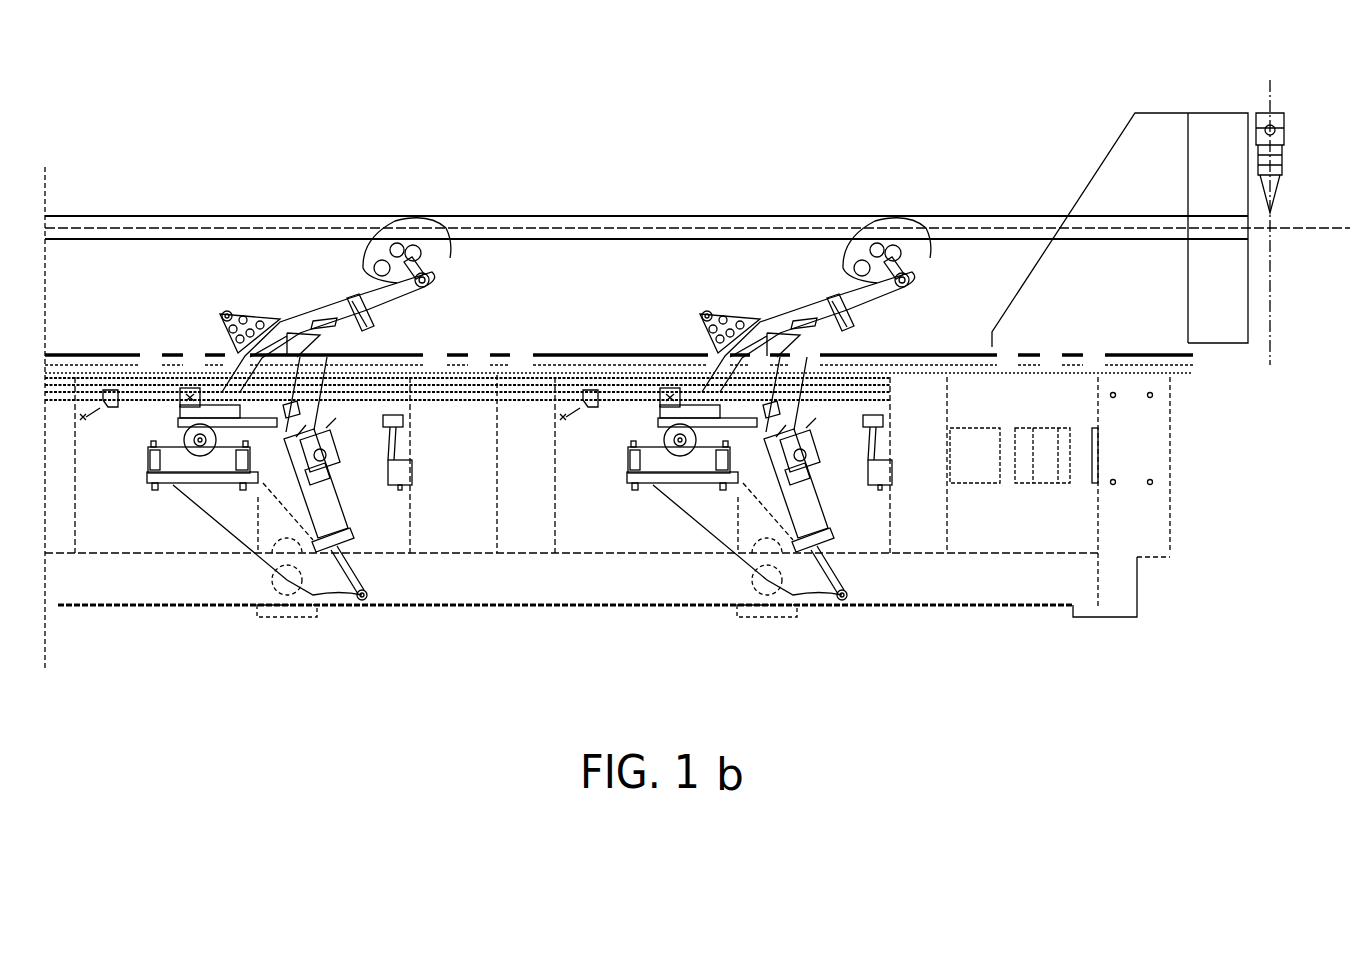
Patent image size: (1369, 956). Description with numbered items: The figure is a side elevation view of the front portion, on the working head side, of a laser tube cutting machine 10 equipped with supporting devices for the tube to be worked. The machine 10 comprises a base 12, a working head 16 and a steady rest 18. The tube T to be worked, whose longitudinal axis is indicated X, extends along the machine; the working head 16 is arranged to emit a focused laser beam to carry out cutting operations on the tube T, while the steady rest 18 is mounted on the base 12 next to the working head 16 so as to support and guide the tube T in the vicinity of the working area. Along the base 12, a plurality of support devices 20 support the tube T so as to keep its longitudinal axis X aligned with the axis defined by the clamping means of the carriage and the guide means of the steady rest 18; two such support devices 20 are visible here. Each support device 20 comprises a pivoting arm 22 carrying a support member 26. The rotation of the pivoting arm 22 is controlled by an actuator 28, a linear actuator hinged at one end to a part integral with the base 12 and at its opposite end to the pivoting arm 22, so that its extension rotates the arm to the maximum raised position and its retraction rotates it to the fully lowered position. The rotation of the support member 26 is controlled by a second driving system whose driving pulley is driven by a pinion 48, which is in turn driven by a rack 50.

The tube working machine 10 is at (480, 203).
The base 12 is at (468, 553).
The working head 16 is at (1290, 162).
The steady rest 18 is at (1105, 160).
The support device 20 is at (342, 292).
The pivoting arm 22 is at (292, 320).
The support member 26 is at (412, 222).
The actuator 28 is at (350, 500).
The pinion 48 is at (186, 486).
The rack 50 is at (248, 450).
The longitudinal axis of the tube X is at (508, 214).
The tube T is at (633, 214).